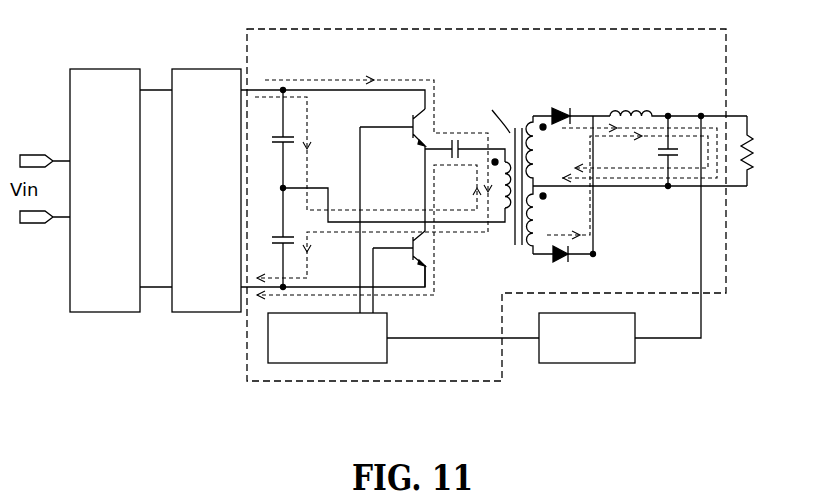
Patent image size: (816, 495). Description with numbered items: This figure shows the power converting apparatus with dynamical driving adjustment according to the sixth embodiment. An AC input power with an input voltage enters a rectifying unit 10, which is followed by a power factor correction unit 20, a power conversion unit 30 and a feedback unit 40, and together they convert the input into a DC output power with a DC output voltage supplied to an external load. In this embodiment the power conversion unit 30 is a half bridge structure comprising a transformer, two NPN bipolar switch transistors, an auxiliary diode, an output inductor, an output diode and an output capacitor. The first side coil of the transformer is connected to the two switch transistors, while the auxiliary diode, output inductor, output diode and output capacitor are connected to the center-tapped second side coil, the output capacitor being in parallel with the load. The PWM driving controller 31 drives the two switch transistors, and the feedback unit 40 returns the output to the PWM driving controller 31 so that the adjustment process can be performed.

The rectifying unit 10 is at (103, 68).
The power factor correction unit 20 is at (205, 68).
The power conversion unit 30 is at (375, 381).
The PWM driving controller 31 is at (328, 364).
The feedback unit 40 is at (587, 364).